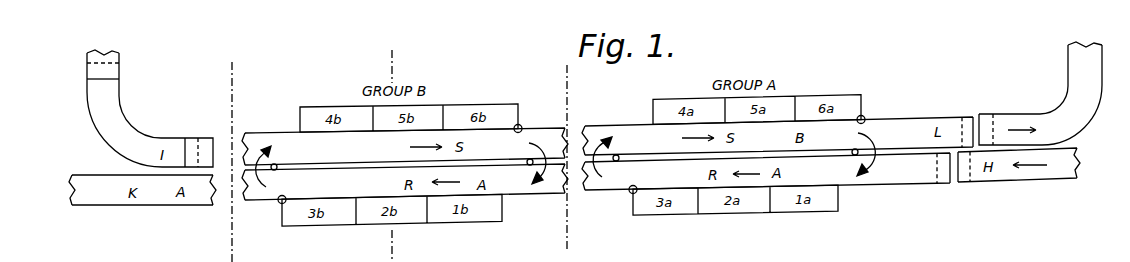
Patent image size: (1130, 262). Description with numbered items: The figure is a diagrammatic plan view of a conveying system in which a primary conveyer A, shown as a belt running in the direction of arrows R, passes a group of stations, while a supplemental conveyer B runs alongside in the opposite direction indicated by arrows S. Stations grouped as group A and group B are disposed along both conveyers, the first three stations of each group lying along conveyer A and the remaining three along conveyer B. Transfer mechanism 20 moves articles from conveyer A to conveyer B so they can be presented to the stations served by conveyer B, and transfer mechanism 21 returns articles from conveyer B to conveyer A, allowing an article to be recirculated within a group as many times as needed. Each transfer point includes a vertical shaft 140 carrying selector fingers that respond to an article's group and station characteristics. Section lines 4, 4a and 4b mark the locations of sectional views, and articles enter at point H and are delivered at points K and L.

The transfer mechanism 20 is at (275, 164).
The transfer mechanism 21 is at (529, 165).
The vertical shaft 140 is at (522, 126).
The section line 4 is at (228, 153).
The section line 4a is at (400, 149).
The section line 4b is at (560, 162).